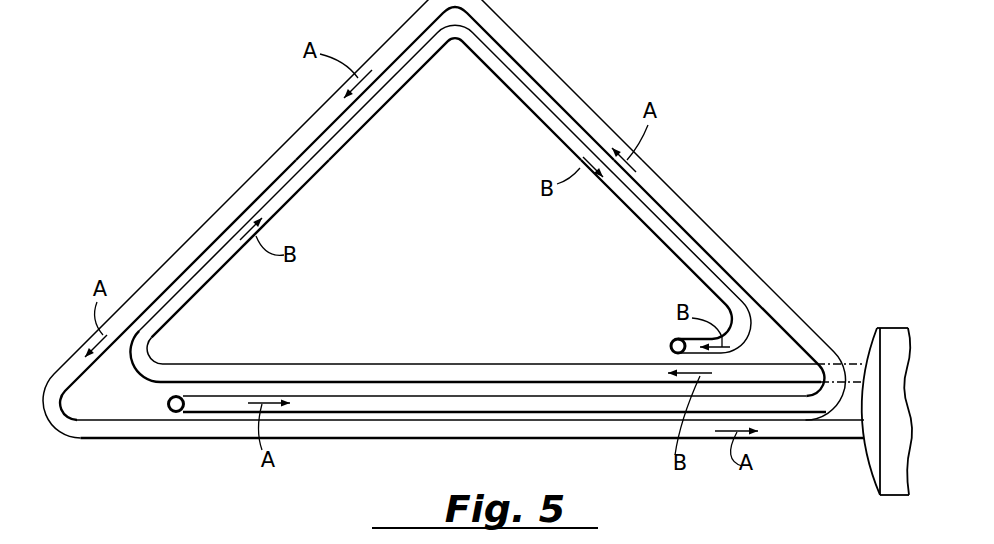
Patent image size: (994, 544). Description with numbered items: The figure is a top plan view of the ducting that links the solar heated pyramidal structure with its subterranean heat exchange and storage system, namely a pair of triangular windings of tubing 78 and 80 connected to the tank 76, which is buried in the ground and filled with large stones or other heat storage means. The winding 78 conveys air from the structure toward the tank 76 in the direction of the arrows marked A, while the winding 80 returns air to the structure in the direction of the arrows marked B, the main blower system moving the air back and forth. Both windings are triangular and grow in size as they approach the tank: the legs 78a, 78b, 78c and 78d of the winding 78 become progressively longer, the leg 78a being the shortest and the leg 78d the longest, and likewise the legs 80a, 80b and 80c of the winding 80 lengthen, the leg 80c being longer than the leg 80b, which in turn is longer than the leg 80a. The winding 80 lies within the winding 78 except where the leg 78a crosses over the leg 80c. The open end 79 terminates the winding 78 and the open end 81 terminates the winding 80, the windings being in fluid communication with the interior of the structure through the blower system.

The tank 76 is at (888, 335).
The triangular winding of tubing 78 is at (290, 142).
The leg of winding 78 78a is at (410, 400).
The leg of winding 78 78b is at (730, 268).
The leg of winding 78 78c is at (250, 181).
The leg of winding 78 78d is at (567, 438).
The open end of outer tube 79 is at (180, 411).
The triangular winding of tubing 80 is at (665, 258).
The leg of winding 80 80a is at (630, 212).
The leg of winding 80 80b is at (320, 172).
The leg of winding 80 80c is at (445, 367).
The open end of inner tube 81 is at (670, 346).